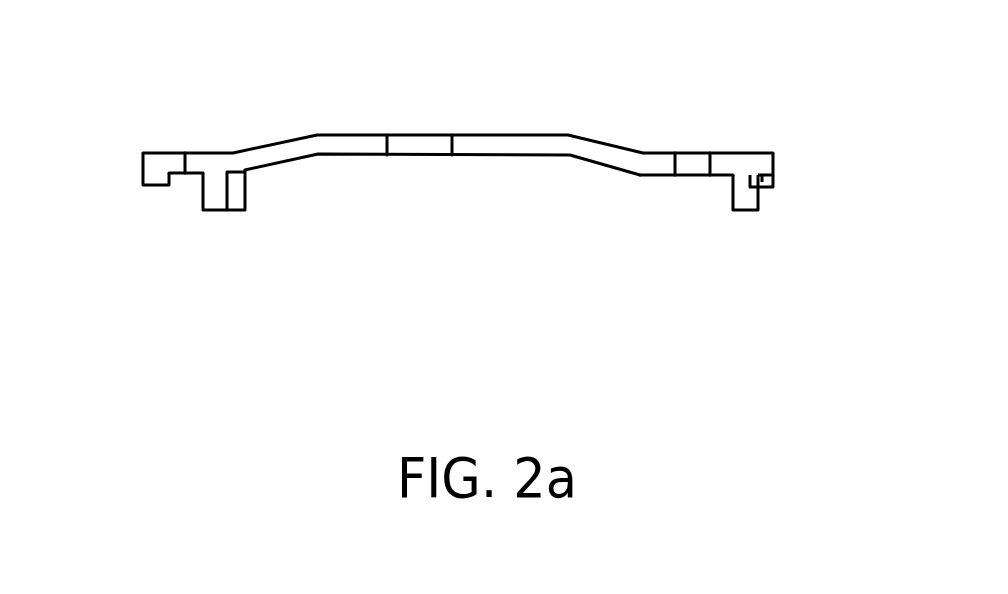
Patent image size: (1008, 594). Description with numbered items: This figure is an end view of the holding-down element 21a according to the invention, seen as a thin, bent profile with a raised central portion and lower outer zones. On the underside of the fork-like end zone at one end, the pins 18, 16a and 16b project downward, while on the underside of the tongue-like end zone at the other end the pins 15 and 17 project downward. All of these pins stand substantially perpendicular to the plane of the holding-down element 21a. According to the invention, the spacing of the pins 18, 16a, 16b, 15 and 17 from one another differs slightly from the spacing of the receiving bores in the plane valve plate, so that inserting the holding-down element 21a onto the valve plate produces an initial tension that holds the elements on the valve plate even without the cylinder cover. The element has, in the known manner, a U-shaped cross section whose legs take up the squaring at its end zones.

The base plate / carrier bar 21a is at (500, 133).
The pin 18 is at (153, 182).
The pin 16a is at (253, 253).
The pin 16b is at (220, 195).
The pin 15 is at (748, 202).
The pin 17 is at (765, 182).